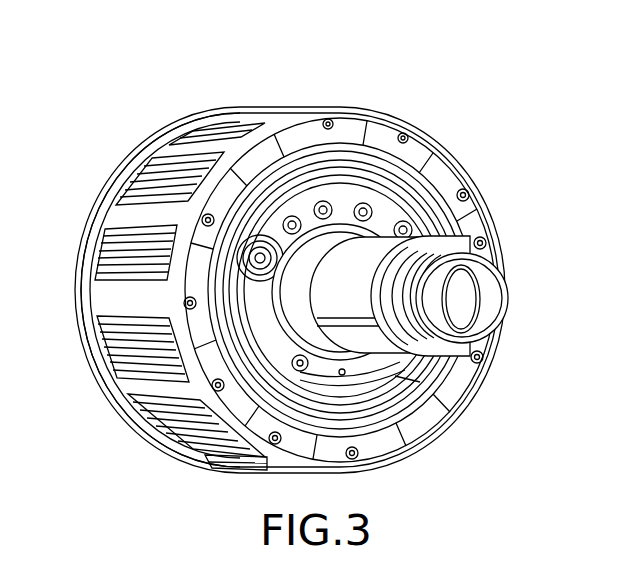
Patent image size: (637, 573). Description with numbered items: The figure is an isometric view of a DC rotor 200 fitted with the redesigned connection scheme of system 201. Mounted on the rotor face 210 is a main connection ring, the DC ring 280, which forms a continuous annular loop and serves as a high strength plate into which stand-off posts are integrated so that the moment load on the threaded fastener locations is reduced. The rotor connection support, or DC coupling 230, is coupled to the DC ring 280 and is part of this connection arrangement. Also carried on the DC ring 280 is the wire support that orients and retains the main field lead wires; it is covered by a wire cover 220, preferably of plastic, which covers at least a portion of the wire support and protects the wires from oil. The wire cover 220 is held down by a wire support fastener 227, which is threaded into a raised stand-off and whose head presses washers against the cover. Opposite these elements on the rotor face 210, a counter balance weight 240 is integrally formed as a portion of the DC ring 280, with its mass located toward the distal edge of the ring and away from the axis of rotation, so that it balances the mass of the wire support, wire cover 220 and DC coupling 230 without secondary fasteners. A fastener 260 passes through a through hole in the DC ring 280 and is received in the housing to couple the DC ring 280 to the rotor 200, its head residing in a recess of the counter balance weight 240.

The system 201 is at (501, 81).
The DC rotor 200 is at (330, 106).
The wire cover 220 is at (358, 193).
The wire support fastener 227 is at (290, 198).
The DC coupling 230 is at (442, 228).
The rotor face 210 is at (245, 313).
The counter balance weight 240 is at (370, 393).
The fastener 260 is at (270, 390).
The DC ring 280 is at (420, 382).